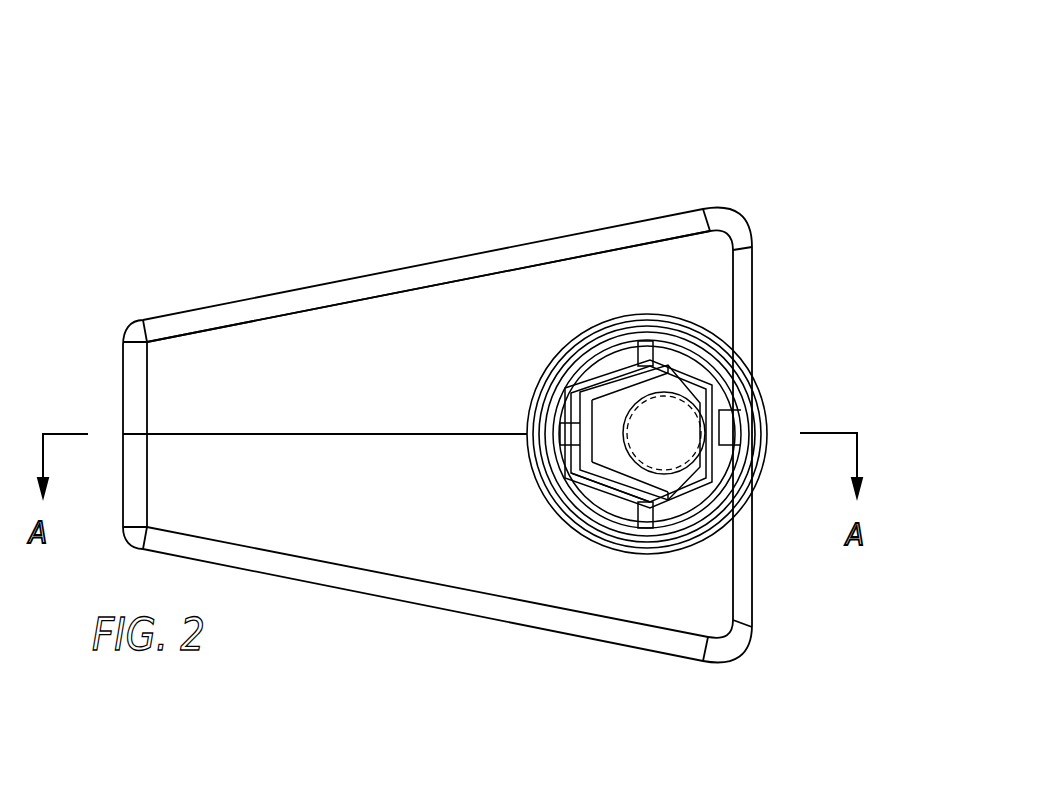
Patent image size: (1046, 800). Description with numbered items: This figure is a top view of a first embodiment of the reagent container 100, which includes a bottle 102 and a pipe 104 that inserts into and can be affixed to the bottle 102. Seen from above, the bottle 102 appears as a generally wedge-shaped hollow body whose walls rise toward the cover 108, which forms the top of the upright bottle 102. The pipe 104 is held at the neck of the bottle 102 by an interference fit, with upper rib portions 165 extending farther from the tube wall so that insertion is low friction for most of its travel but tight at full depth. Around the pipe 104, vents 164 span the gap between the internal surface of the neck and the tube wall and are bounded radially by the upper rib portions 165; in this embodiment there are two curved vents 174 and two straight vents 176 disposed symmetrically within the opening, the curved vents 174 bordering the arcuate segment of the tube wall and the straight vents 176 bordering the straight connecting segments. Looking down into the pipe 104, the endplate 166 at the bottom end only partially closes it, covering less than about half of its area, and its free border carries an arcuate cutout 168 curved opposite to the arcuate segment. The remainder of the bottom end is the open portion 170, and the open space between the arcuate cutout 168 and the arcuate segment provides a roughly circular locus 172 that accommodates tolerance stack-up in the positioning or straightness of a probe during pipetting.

The reagent container 100 is at (740, 168).
The bottle 102 is at (208, 318).
The pipe 104 is at (605, 446).
The cover 108 is at (370, 370).
The vents 164 is at (626, 362).
The upper rib portions 165 is at (647, 517).
The endplate 166 is at (607, 422).
The arcuate cutout 168 is at (623, 433).
The open portion 170 is at (698, 371).
The roughly circular locus 172 is at (686, 403).
The curved vents 174 is at (670, 408).
The straight vents 176 is at (613, 500).